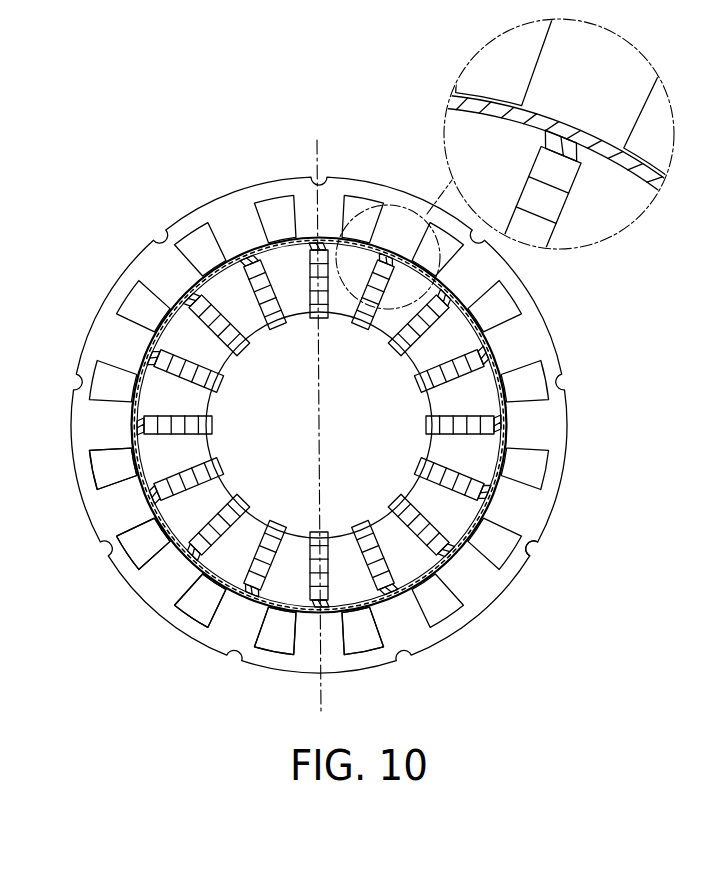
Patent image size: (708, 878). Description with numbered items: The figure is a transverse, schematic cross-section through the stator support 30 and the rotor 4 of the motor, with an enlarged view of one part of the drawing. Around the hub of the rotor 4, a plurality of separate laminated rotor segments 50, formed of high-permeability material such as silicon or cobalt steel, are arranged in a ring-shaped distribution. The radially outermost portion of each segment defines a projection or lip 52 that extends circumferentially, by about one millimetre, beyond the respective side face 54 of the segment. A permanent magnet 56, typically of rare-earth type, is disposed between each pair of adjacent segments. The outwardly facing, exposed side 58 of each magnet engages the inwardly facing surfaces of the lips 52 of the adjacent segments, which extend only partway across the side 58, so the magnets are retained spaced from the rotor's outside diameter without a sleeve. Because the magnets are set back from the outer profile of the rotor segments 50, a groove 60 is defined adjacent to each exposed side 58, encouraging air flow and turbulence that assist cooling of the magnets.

The rotor 4 is at (353, 420).
The stator support 30 is at (352, 189).
The laminated rotor segment 50 is at (480, 393).
The lip 52 is at (523, 543).
The side face 54 is at (417, 483).
The permanent magnet 56 is at (113, 526).
The exposed side of magnet 58 is at (241, 612).
The groove 60 is at (249, 261).